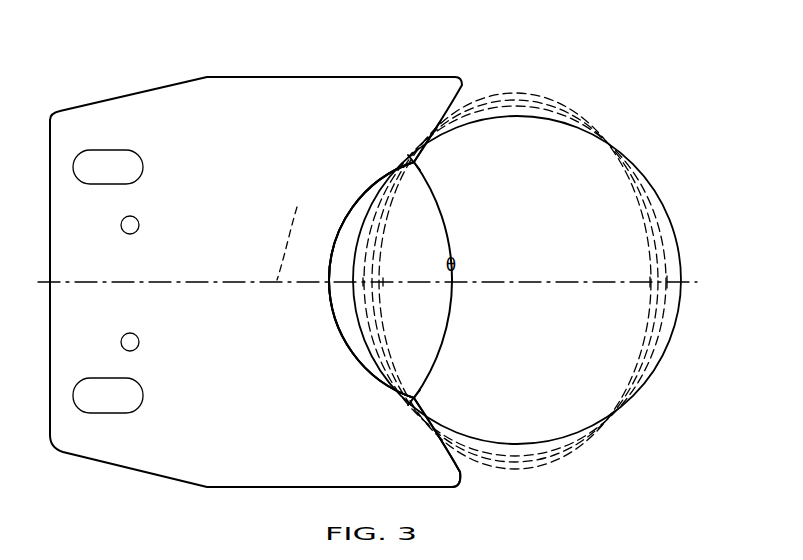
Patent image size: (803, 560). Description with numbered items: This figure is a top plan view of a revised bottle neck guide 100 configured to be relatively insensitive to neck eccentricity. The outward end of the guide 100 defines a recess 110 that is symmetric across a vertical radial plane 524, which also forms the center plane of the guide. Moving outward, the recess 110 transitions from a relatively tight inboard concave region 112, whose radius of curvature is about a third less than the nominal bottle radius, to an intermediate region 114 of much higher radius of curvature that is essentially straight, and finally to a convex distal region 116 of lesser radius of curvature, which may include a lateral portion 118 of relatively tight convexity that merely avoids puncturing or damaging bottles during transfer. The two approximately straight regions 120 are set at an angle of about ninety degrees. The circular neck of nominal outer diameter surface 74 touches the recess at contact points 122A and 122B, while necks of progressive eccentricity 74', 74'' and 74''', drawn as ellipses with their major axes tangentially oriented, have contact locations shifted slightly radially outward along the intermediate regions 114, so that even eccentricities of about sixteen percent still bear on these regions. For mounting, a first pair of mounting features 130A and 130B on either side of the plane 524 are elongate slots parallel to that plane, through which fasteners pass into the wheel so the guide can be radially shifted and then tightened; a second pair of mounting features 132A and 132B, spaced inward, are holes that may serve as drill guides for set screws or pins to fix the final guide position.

The guide 100 is at (256, 249).
The approximately straight regions 120 is at (256, 282).
The mounting feature 130A is at (130, 395).
The mounting feature 130B is at (130, 167).
The mounting feature 132A is at (139, 342).
The mounting feature 132B is at (139, 226).
The vertical radial plane 524 is at (296, 233).
The neck outer diameter surface 74 is at (517, 280).
The eccentric neck outer diameter surface 74' is at (515, 281).
The eccentric neck outer diameter surface 74'' is at (515, 281).
The eccentric neck outer diameter surface 74''' is at (523, 281).
The recess 110 is at (410, 333).
The inboard concave region 112 is at (335, 275).
The intermediate region 114 is at (423, 153).
The distal region 116 is at (465, 460).
The lateral portion 118 is at (463, 487).
The contact point 122A is at (407, 393).
The contact point 122B is at (410, 168).